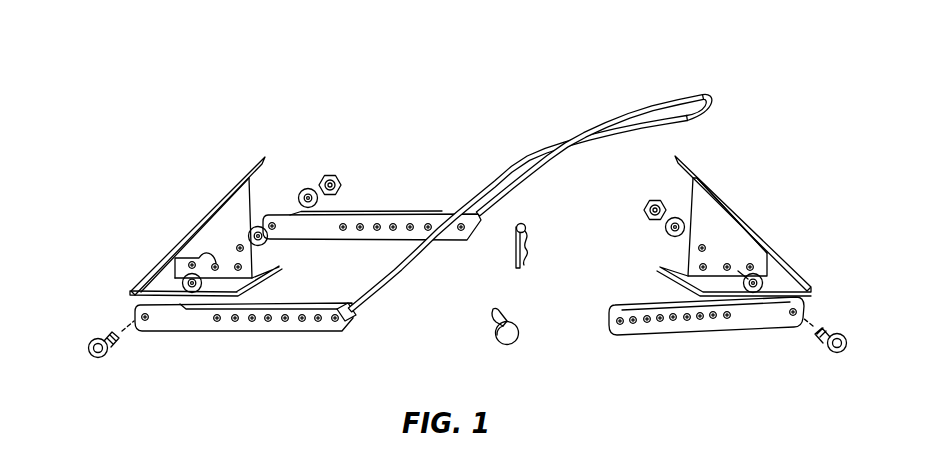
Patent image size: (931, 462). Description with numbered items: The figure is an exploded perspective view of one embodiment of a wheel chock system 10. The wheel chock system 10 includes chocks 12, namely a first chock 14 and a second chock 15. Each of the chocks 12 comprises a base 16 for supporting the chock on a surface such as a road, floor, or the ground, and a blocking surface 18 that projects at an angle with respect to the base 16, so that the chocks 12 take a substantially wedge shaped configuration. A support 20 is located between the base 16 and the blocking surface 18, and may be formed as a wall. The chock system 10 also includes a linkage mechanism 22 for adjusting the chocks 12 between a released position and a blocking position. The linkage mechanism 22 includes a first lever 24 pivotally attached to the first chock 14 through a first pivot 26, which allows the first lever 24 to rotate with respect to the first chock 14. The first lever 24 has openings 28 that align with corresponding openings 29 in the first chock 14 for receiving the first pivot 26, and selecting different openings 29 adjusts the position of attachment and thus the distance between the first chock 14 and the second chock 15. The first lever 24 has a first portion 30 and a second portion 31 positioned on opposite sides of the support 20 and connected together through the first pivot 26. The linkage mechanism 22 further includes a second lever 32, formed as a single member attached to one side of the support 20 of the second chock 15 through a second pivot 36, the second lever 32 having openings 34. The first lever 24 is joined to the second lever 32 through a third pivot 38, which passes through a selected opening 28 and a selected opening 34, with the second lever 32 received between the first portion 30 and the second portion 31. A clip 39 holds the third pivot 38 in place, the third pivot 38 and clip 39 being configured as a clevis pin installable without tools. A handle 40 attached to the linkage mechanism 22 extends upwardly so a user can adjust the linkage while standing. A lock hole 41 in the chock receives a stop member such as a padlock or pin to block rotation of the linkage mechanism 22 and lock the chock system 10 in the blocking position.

The wheel chock system 10 is at (494, 75).
The chocks 12 is at (233, 185).
The first chock 14 is at (204, 201).
The second chock 15 is at (783, 249).
The base 16 is at (660, 268).
The blocking surface 18 is at (186, 223).
The support 20 is at (234, 213).
The linkage mechanism 22 is at (350, 327).
The first lever 24 is at (258, 335).
The first pivot 26 is at (95, 341).
The openings 28 is at (217, 322).
The openings 29 is at (178, 248).
The first portion 30 is at (328, 333).
The second portion 31 is at (383, 214).
The second lever 32 is at (683, 328).
The openings 34 is at (648, 322).
The second pivot 36 is at (836, 338).
The third pivot 38 is at (512, 334).
The clip 39 is at (528, 220).
The handle 40 is at (690, 118).
The lock hole 41 is at (279, 264).